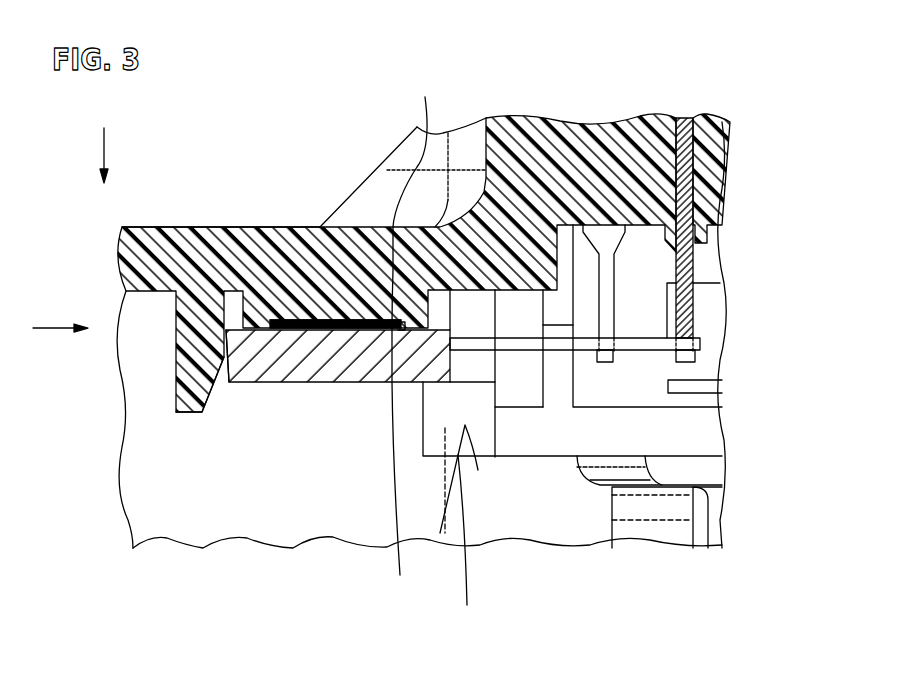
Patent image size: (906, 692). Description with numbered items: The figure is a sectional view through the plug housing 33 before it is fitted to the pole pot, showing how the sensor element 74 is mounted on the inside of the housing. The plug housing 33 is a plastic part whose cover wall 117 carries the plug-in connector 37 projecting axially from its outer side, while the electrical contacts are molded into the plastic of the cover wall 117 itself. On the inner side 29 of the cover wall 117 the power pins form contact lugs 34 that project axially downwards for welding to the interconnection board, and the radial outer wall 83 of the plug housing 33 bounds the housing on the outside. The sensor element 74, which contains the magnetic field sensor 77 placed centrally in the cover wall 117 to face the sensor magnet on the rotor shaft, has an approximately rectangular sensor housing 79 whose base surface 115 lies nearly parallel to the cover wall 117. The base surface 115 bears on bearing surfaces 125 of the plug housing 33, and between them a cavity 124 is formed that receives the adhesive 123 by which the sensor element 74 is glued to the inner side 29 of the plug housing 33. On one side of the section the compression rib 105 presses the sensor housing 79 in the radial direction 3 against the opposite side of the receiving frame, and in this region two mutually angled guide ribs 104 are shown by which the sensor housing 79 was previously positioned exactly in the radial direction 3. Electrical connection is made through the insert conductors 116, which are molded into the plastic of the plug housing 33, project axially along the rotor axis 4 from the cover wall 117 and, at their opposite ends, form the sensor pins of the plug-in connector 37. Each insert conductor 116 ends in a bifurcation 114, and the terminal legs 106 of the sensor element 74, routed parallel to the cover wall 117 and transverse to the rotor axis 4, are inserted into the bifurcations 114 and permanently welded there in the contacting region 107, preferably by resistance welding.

The plug housing 33 is at (140, 262).
The plug-in connector 37 is at (575, 160).
The cover wall 117 is at (192, 253).
The sensor element 74 is at (309, 235).
The magnetic field sensor 77 is at (293, 318).
The inner side 29 is at (322, 318).
The adhesive 123 is at (362, 320).
The base surface 115 is at (403, 200).
The sensor housing 79 is at (302, 355).
The bearing surfaces 125 is at (253, 335).
The compression rib 105 is at (185, 413).
The radial outer wall 83 is at (340, 392).
The cavity 124 is at (405, 466).
The guide ribs 104 is at (448, 377).
The insert conductors 116 is at (605, 297).
The terminal legs 106 is at (668, 380).
The contacting region 107 is at (698, 352).
The bifurcation 114 is at (602, 363).
The contact lugs 34 is at (712, 517).
The rotor axis 4 is at (102, 153).
The radial direction 3 is at (52, 329).